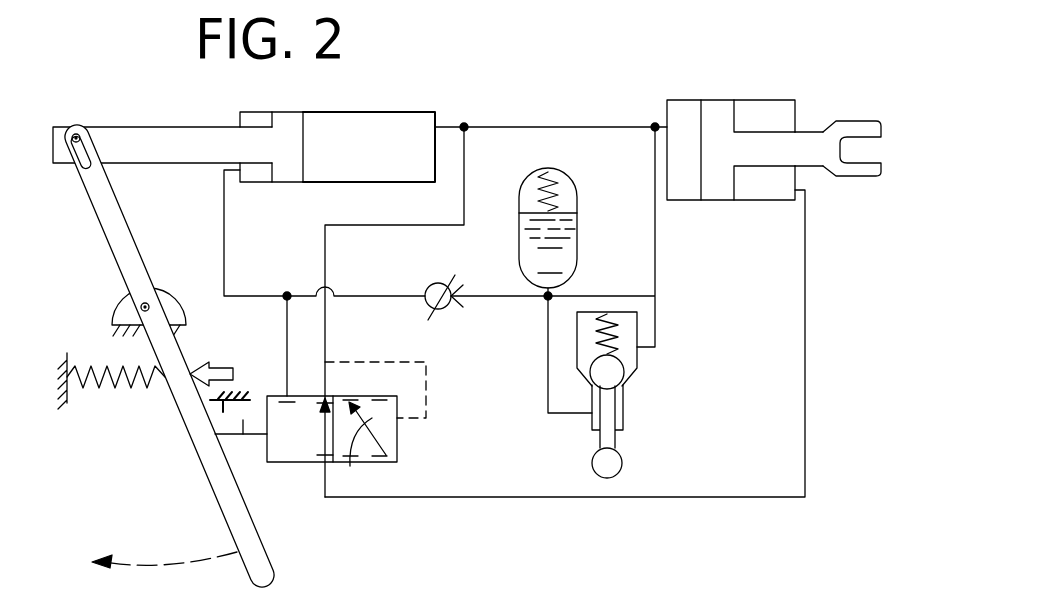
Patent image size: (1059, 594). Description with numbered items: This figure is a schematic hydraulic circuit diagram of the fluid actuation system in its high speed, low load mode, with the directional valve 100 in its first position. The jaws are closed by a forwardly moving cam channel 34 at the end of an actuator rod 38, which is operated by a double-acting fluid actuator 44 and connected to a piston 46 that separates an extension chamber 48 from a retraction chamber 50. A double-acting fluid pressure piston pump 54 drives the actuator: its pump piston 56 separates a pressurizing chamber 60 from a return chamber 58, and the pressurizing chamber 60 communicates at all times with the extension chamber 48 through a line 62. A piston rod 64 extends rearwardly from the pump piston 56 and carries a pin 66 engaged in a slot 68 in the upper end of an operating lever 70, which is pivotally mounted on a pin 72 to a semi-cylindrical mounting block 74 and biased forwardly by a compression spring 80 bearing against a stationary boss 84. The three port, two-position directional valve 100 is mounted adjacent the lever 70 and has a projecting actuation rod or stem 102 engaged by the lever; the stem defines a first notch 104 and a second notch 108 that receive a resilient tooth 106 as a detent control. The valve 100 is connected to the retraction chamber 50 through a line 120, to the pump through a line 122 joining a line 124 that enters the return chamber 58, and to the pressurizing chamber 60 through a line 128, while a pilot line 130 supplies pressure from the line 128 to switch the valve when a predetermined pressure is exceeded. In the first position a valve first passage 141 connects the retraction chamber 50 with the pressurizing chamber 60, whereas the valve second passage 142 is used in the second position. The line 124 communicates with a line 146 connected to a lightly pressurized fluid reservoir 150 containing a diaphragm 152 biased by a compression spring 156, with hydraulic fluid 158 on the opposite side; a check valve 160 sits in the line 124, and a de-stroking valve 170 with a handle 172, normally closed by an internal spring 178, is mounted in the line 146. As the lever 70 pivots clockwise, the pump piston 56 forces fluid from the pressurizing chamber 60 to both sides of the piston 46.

The cam channel 34 is at (870, 168).
The actuator rod 38 is at (820, 153).
The double-acting fluid actuator 44 is at (800, 107).
The piston 46 is at (715, 110).
The extension chamber 48 is at (680, 113).
The retraction chamber 50 is at (757, 123).
The double-acting fluid pressure piston pump 54 is at (436, 113).
The pump piston 56 is at (287, 127).
The return chamber 58 is at (253, 118).
The pressurizing chamber 60 is at (368, 148).
The line 62 is at (462, 125).
The piston rod 64 is at (137, 140).
The pin 66 is at (80, 127).
The slot 68 is at (100, 167).
The operating lever 70 is at (127, 250).
The pin 72 is at (148, 305).
The semi-cylindrical mounting block 74 is at (173, 313).
The compression spring 80 is at (107, 382).
The stationary boss 84 is at (67, 353).
The directional valve 100 is at (399, 438).
The actuation rod or stem 102 is at (244, 440).
The first notch 104 is at (203, 407).
The resilient tooth 106 is at (223, 419).
The second notch 108 is at (253, 419).
The line 120 is at (805, 290).
The line 122 is at (287, 325).
The line 124 is at (308, 290).
The line 128 is at (467, 193).
The pilot line 130 is at (427, 393).
The valve first passage 141 is at (298, 426).
The valve second passage 142 is at (354, 448).
The line 146 is at (552, 307).
The fluid reservoir 150 is at (535, 166).
The diaphragm 152 is at (563, 212).
The compression spring 156 is at (557, 185).
The hydraulic fluid 158 is at (548, 262).
The check valve 160 is at (454, 276).
The de-stroking valve 170 is at (628, 385).
The handle 172 is at (622, 467).
The internal spring 178 is at (608, 317).